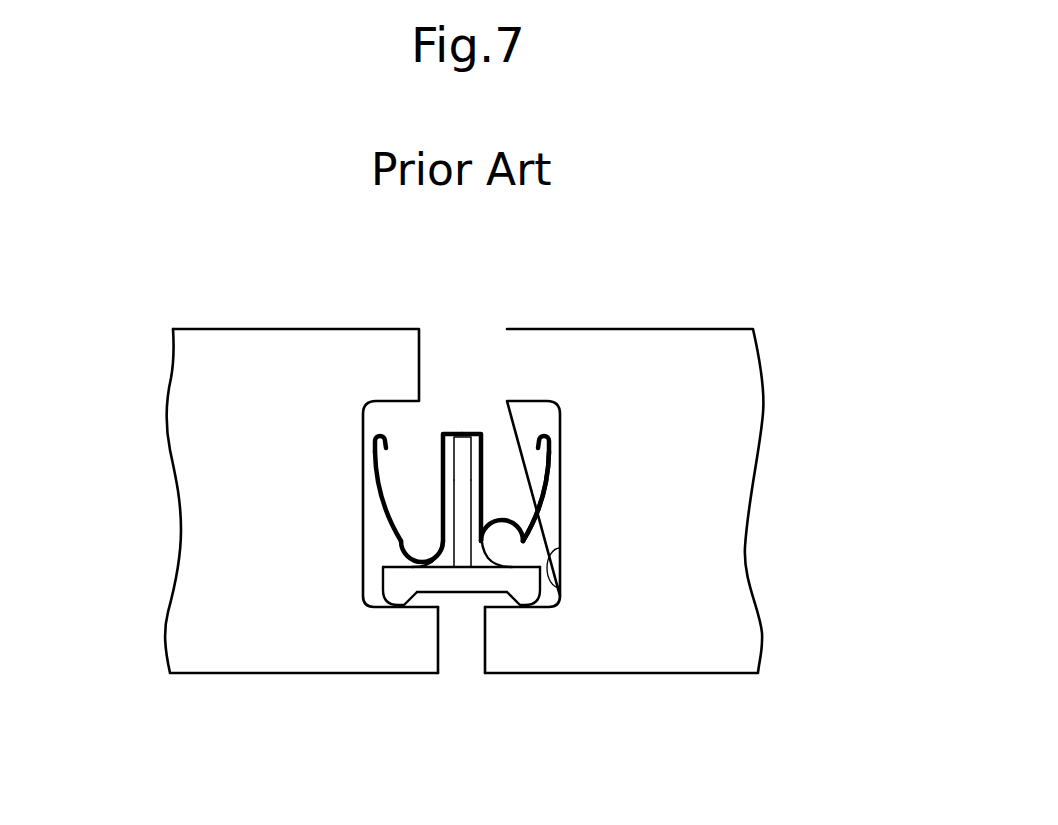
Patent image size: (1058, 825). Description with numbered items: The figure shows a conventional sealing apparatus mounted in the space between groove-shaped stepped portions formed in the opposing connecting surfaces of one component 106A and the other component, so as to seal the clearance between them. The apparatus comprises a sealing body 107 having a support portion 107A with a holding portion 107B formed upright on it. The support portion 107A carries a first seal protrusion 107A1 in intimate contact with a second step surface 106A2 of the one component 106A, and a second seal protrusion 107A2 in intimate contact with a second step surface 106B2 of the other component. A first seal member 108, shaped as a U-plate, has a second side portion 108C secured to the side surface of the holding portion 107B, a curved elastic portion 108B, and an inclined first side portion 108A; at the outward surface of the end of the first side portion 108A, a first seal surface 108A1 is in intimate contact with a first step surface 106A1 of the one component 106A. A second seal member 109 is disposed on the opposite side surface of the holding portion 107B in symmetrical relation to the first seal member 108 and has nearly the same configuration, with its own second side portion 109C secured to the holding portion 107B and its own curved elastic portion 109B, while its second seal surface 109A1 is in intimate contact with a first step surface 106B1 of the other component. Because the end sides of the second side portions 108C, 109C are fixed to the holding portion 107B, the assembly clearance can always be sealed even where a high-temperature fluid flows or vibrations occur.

The one component 106A is at (671, 545).
The first step surface of the one component 106A1 is at (545, 594).
The second step surface of the one component 106A2 is at (485, 598).
The first step surface of the other component 106B1 is at (262, 553).
The second step surface of the other component 106B2 is at (440, 598).
The sealing body 107 is at (461, 583).
The support portion 107A is at (437, 540).
The first seal protrusion 107A1 is at (527, 594).
The second seal protrusion 107A2 is at (398, 595).
The holding portion 107B is at (460, 473).
The first seal member 108 is at (685, 446).
The first side portion of the first seal member 108A is at (557, 500).
The first seal surface 108A1 is at (560, 440).
The elastic portion 108B is at (487, 533).
The second side portion of the first seal member 108C is at (482, 460).
The second seal member 109 is at (267, 465).
The second seal surface 109A1 is at (364, 434).
The elastic portion of the second seal member 109B is at (403, 550).
The second side portion of the second seal member 109C is at (445, 510).